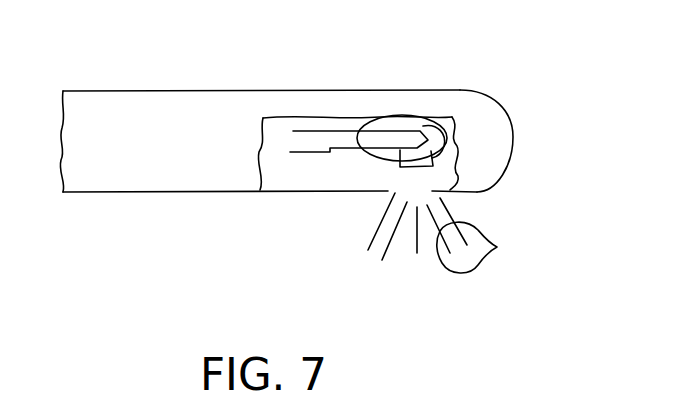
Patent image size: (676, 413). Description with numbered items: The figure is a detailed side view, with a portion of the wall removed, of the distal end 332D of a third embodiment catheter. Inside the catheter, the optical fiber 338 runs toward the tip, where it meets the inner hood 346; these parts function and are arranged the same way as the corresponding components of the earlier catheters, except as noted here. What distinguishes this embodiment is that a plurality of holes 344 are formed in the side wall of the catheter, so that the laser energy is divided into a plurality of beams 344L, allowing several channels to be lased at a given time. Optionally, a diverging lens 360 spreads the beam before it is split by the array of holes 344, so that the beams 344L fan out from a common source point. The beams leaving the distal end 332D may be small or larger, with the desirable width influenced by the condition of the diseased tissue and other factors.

The distal end 332D is at (135, 92).
The optical fiber 338 is at (318, 132).
The inner hood 346 is at (422, 127).
The diverging lens 360 is at (435, 171).
The holes 344 is at (477, 192).
The beams 344L is at (417, 289).